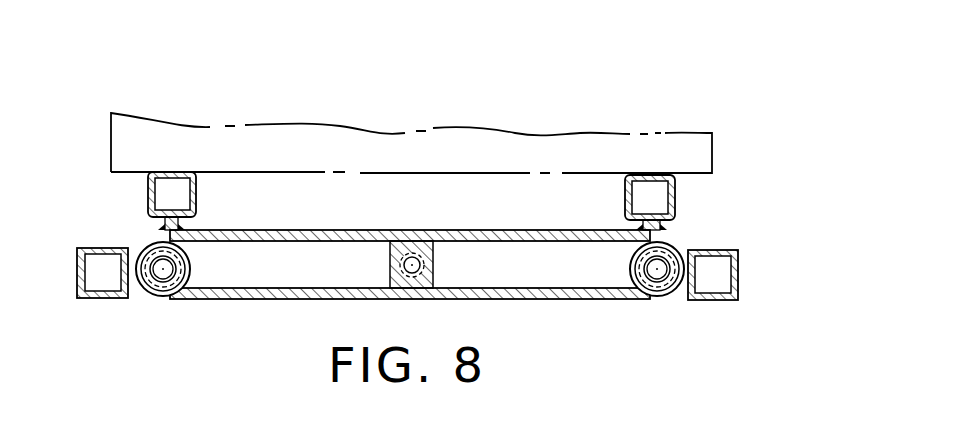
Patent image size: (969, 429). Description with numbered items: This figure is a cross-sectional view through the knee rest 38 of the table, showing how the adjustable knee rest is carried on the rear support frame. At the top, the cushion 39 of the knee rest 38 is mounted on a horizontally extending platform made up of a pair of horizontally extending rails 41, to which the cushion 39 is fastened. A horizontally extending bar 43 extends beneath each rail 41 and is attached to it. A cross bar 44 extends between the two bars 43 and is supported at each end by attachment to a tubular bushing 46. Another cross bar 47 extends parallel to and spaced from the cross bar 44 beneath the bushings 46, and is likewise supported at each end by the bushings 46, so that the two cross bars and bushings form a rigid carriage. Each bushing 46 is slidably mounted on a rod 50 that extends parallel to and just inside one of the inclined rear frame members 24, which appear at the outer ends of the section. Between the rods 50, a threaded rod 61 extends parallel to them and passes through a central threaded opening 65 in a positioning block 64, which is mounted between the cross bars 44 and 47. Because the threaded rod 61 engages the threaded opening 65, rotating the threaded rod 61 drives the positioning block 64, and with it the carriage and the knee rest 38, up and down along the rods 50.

The inclined rear frame member 24 is at (100, 298).
The knee rest 38 is at (98, 141).
The cushion 39 is at (690, 151).
The rail 41 is at (148, 196).
The bar 43 is at (165, 229).
The cross bar 44 is at (300, 230).
The tubular bushing 46 is at (170, 297).
The cross bar 47 is at (290, 299).
The rod 50 is at (178, 268).
The threaded rod 61 is at (414, 244).
The positioning block 64 is at (433, 272).
The threaded opening 65 is at (404, 268).